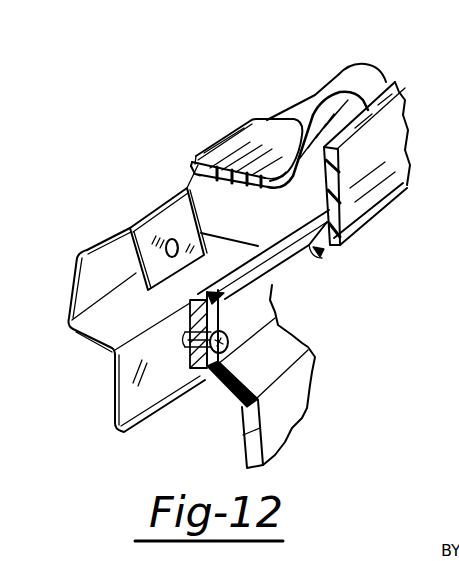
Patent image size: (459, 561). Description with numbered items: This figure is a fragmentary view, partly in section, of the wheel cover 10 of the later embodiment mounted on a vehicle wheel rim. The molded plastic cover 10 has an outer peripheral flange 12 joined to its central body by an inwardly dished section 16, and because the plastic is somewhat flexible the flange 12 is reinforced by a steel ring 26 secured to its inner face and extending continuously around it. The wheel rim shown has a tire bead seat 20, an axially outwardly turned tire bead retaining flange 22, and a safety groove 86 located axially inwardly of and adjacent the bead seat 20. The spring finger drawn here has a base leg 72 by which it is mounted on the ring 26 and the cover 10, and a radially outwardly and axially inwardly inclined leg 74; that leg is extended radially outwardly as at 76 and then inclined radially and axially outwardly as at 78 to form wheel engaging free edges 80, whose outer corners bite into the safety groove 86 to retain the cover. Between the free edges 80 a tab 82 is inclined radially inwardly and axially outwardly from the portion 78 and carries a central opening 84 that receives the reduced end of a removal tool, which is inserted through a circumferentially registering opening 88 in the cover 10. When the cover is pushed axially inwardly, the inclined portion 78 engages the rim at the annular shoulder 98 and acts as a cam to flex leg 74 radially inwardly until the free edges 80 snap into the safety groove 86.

The wheel cover 10 is at (303, 381).
The outer peripheral flange 12 is at (395, 143).
The inwardly dished section 16 is at (257, 302).
The tire bead seat 20 is at (272, 128).
The tire bead retaining flange 22 is at (366, 73).
The steel ring 26 is at (195, 355).
The base leg 72 is at (115, 403).
The inclined leg 74 is at (93, 342).
The radially outward extension 76 is at (72, 287).
The inclined portion 78 is at (147, 210).
The wheel engaging free edges 80 is at (107, 240).
The tab 82 is at (150, 258).
The central opening 84 is at (185, 227).
The safety groove 86 is at (192, 165).
The registering opening 88 is at (303, 248).
The annular shoulder 98 is at (263, 187).